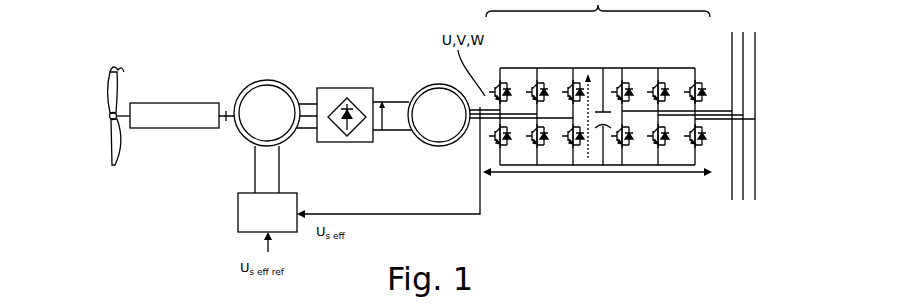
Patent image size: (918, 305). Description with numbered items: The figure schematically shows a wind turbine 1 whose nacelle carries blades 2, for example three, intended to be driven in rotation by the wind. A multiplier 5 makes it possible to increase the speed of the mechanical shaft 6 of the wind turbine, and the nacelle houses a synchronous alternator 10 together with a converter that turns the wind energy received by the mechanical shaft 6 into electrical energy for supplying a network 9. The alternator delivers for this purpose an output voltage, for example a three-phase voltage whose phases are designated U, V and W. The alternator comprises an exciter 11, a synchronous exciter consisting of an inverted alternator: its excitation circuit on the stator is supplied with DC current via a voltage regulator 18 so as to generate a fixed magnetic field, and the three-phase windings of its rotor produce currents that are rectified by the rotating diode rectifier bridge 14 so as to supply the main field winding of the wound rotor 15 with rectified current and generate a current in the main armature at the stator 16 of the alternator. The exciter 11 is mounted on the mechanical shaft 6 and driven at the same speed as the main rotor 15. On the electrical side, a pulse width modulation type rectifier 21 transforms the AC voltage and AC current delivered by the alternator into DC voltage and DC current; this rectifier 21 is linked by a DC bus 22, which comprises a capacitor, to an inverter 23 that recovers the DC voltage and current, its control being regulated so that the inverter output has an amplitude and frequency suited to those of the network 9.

The wind turbine 1 is at (94, 66).
The blades 2 is at (116, 96).
The multiplier 5 is at (193, 107).
The mechanical shaft 6 is at (227, 120).
The network 9 is at (763, 176).
The synchronous alternator 10 is at (238, 76).
The exciter 11 is at (258, 121).
The rectifier bridge 14 is at (340, 137).
The wound rotor 15 is at (430, 137).
The stator 16 is at (439, 115).
The voltage regulator 18 is at (277, 220).
The rectifier 21 is at (588, 57).
The DC bus 22 is at (620, 57).
The inverter 23 is at (697, 57).